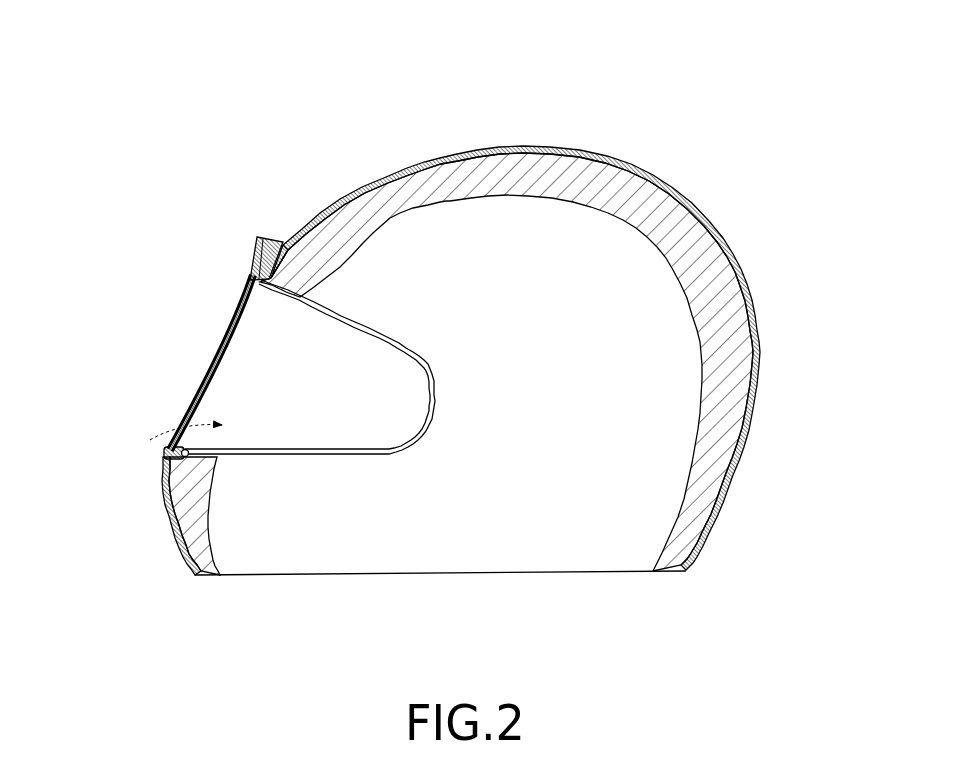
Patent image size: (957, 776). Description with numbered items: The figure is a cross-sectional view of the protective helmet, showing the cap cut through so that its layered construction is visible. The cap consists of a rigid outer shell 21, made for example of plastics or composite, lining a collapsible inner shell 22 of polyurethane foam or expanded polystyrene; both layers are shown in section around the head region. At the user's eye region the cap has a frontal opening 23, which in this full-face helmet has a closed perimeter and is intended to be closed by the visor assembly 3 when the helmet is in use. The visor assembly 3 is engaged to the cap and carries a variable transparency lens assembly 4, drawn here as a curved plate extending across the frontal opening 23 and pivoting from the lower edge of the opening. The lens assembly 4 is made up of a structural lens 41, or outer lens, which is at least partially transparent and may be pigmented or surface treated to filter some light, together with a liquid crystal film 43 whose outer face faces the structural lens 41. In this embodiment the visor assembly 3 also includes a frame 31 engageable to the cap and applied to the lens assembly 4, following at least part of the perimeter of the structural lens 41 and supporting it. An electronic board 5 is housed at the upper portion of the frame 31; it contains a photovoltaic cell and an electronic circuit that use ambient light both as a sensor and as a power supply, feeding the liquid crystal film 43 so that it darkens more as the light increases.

The rigid outer shell 21 is at (750, 288).
The collapsible inner shell 22 is at (665, 230).
The frontal opening 23 is at (172, 432).
The visor assembly 3 is at (207, 369).
The variable transparency lens assembly 4 is at (176, 419).
The structural lens 41 is at (187, 400).
The liquid crystal film 43 is at (208, 376).
The electronic board 5 is at (260, 237).
The frame 31 is at (273, 237).